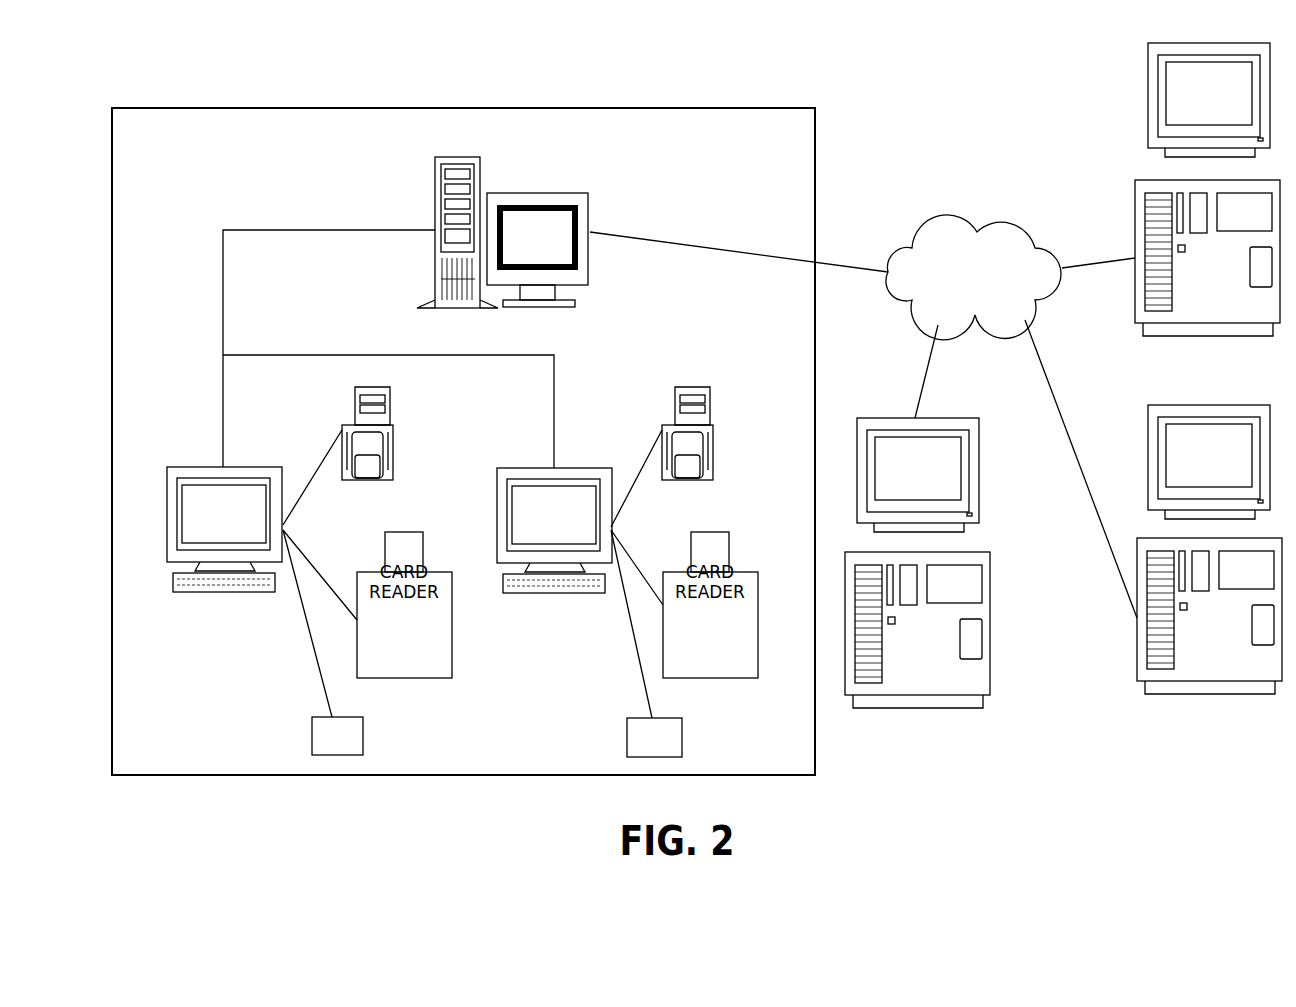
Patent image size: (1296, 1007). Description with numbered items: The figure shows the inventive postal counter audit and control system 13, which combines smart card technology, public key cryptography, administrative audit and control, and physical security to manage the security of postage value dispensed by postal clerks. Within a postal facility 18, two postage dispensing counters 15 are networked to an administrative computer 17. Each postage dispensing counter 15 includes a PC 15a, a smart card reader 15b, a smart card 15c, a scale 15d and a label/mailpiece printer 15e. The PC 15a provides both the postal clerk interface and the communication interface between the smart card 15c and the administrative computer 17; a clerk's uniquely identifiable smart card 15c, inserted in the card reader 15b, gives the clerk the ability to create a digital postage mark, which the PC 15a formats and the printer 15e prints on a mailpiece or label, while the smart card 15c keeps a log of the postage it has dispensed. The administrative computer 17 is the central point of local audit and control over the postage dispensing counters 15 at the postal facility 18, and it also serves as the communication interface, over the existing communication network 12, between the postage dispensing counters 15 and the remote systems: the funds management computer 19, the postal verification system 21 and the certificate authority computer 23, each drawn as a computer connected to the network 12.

The communication network 12 is at (1003, 218).
The postal counter audit and control system 13 is at (734, 89).
The postage dispensing counter 15 is at (231, 659).
The PC 15a is at (193, 465).
The smart card reader 15b is at (400, 685).
The smart card 15c is at (423, 552).
The scale 15d is at (312, 748).
The label/mailpiece printer 15e is at (393, 448).
The administrative computer 17 is at (520, 172).
The postal facility 18 is at (815, 158).
The funds management computer 19 is at (1098, 143).
The postal verification system 21 is at (1128, 714).
The certificate authority computer 23 is at (893, 732).